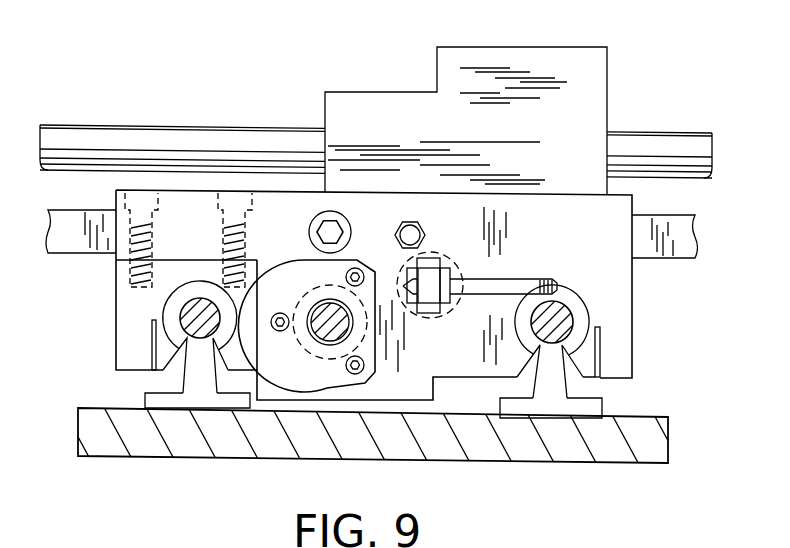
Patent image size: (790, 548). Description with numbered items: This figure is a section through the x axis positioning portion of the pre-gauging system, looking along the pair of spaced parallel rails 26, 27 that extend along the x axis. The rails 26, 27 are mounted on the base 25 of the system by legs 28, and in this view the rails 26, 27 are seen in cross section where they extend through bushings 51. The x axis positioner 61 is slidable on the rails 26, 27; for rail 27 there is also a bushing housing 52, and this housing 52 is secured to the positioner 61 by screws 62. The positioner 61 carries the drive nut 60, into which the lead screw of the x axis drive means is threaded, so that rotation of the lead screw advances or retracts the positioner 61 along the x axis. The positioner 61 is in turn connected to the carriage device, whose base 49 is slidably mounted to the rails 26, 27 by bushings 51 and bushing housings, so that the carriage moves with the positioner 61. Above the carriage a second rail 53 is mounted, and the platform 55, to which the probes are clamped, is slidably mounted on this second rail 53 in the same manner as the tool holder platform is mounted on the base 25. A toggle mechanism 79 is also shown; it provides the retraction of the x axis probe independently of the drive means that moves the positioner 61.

The base 25 is at (603, 453).
The rail 26 is at (567, 318).
The rail 27 is at (186, 314).
The legs 28 is at (597, 407).
The base of carriage device 49 is at (678, 217).
The bushings 51 is at (180, 342).
The bushing housing 52 is at (128, 333).
The second rail 53 is at (640, 134).
The platform 55 is at (563, 57).
The drive nut 60 is at (318, 372).
The x axis positioner 61 is at (620, 332).
The screws 62 is at (130, 268).
The toggle mechanism 79 is at (511, 279).